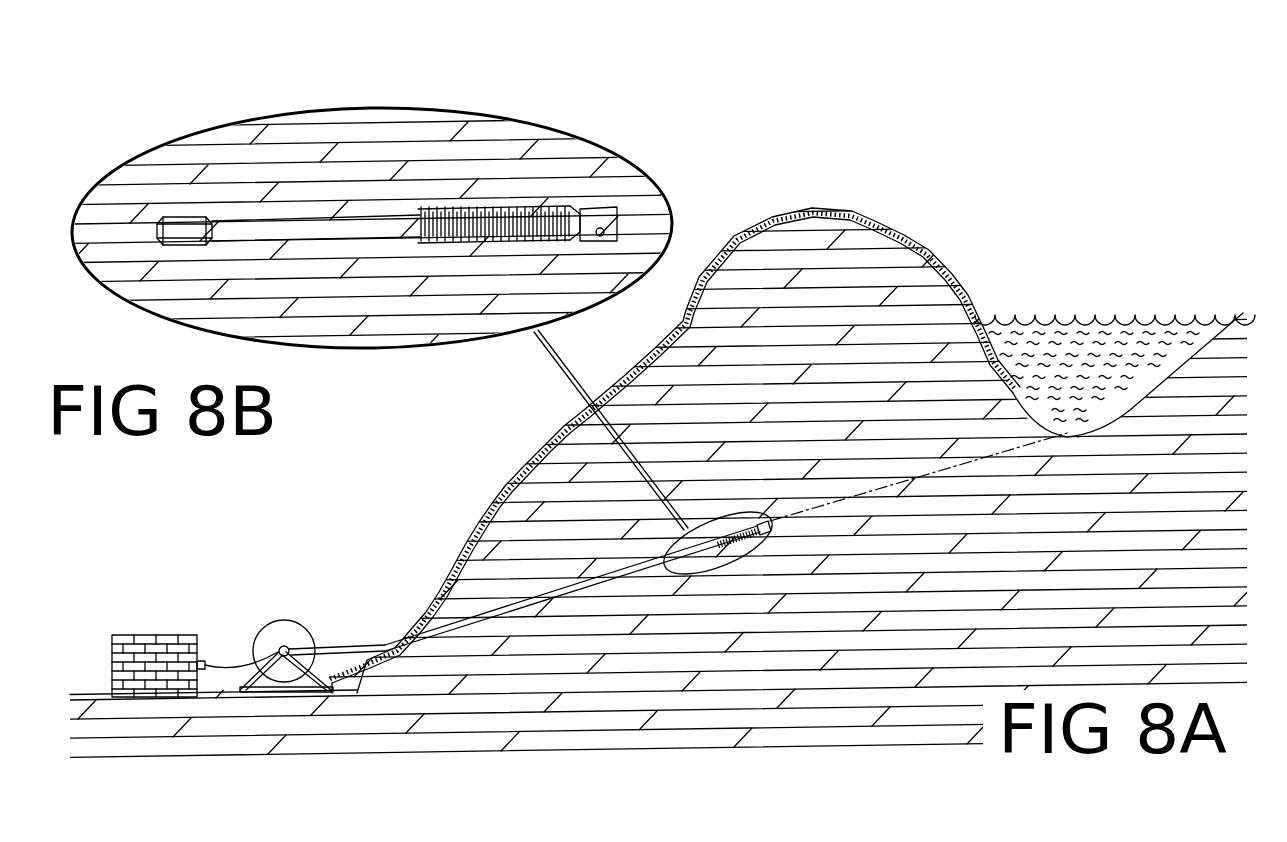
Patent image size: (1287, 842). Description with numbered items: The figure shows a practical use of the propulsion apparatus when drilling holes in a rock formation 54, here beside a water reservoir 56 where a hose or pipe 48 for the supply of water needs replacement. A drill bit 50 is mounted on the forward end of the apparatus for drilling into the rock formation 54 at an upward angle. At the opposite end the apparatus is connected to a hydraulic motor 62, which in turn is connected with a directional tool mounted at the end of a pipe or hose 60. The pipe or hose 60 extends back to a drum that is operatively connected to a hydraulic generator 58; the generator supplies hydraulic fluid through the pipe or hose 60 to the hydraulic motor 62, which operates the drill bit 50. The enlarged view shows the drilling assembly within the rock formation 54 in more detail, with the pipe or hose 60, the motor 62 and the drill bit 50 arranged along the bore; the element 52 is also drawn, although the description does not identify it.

In FIG. 8A, the hose or pipe 48 is at (937, 272).
In FIG. 8B, the drill bit 50 is at (602, 208).
In FIG. 8A, the pipe 52 is at (562, 590).
In FIG. 8B, the pipe 52 is at (243, 220).
In FIG. 8A, the rock formation 54 is at (802, 347).
In FIG. 8B, the rock formation 54 is at (438, 182).
In FIG. 8A, the water reservoir 56 is at (1062, 318).
In FIG. 8A, the hydraulic generator 58 is at (153, 633).
In FIG. 8A, the pipe or hose 60 is at (372, 652).
In FIG. 8B, the pipe or hose 60 is at (118, 230).
In FIG. 8B, the hydraulic motor 62 is at (312, 225).